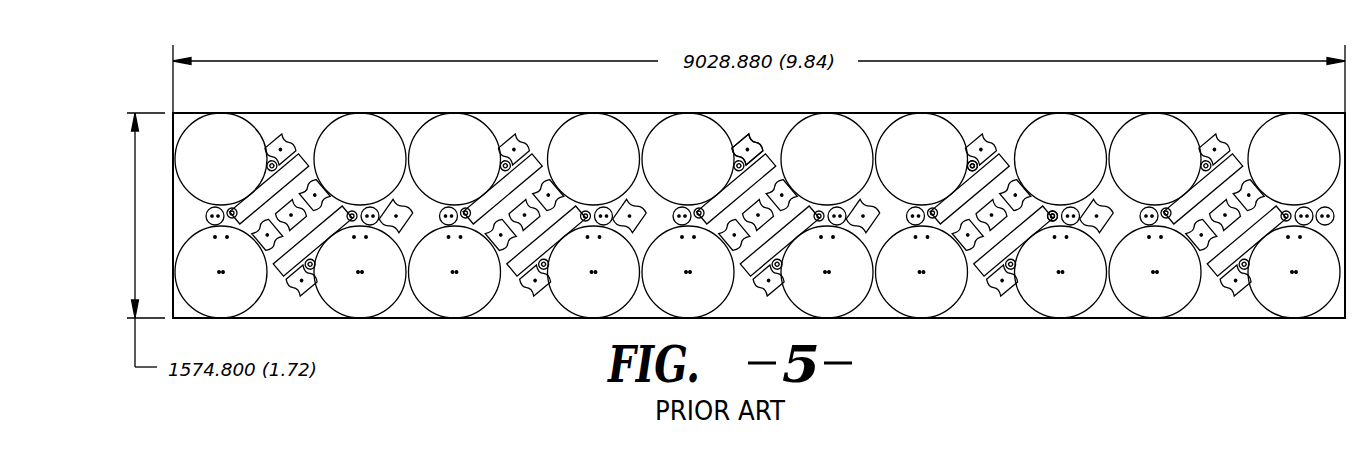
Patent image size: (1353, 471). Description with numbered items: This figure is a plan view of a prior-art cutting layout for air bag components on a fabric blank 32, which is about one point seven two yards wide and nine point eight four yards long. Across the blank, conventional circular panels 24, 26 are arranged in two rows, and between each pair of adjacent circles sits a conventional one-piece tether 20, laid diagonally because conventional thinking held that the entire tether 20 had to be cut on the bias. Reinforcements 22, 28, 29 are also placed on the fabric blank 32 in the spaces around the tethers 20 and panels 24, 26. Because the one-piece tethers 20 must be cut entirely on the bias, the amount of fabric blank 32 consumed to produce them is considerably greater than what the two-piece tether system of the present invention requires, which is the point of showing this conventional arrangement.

The one-piece tether 20 is at (563, 218).
The reinforcement 22 is at (1325, 225).
The circular panel 24 is at (367, 132).
The circular panel 26 is at (382, 285).
The reinforcement 28 is at (746, 150).
The reinforcement 29 is at (1050, 216).
The fabric blank 32 is at (1023, 318).